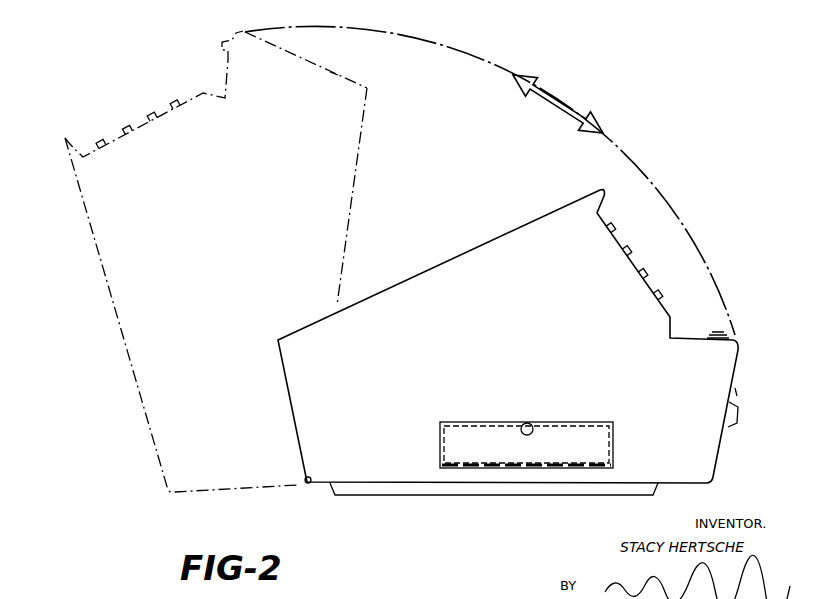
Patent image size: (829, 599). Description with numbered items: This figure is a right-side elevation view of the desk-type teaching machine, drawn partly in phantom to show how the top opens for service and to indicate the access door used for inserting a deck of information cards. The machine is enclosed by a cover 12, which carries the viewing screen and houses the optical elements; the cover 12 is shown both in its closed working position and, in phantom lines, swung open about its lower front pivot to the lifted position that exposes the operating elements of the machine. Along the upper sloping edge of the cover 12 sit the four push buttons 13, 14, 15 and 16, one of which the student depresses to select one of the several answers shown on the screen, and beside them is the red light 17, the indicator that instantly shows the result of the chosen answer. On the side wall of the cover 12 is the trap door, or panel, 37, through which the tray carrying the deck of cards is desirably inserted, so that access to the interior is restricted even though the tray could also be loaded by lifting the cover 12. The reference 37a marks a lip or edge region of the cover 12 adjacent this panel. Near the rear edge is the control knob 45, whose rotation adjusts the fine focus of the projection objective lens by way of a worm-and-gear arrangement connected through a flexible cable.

The cover 12 is at (102, 253).
The push button 13 is at (613, 224).
The push button 14 is at (629, 247).
The push button 15 is at (645, 270).
The push button 16 is at (660, 292).
The red light 17 is at (718, 334).
The trap door 37 is at (497, 423).
The lip 37a is at (735, 390).
The focus knob 45 is at (737, 423).